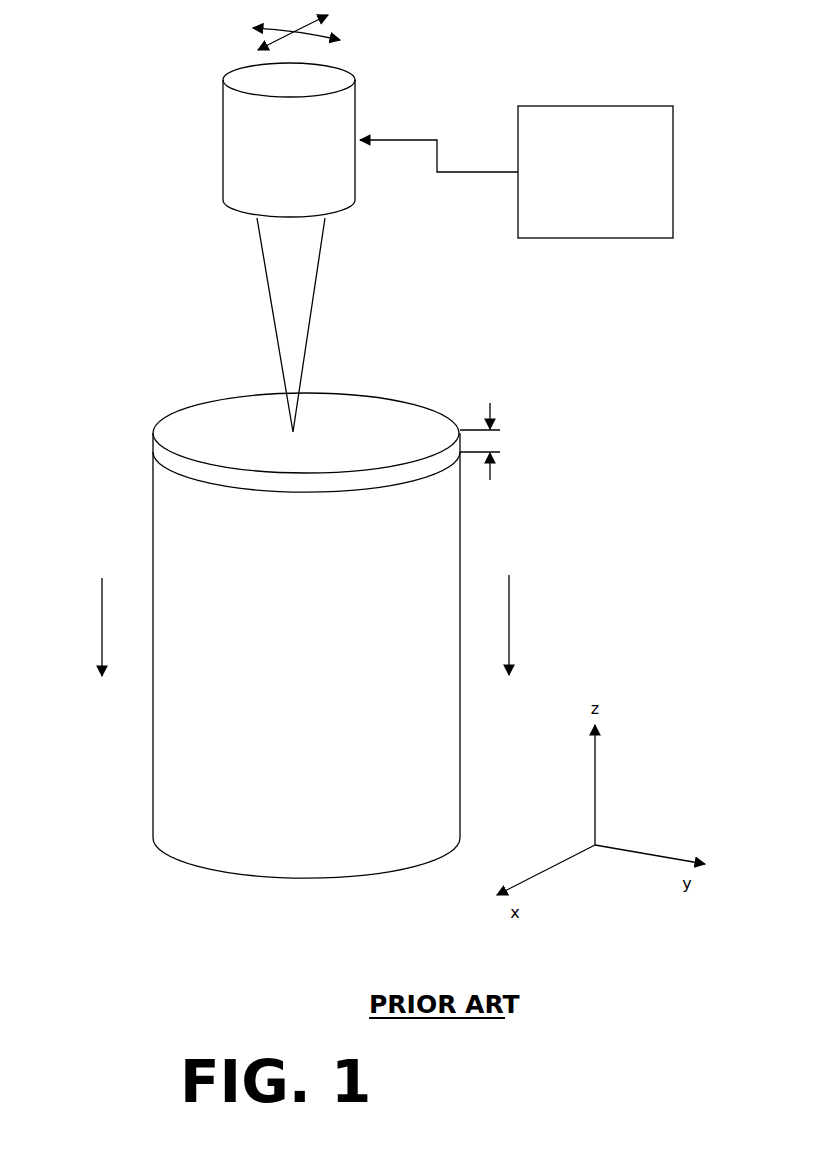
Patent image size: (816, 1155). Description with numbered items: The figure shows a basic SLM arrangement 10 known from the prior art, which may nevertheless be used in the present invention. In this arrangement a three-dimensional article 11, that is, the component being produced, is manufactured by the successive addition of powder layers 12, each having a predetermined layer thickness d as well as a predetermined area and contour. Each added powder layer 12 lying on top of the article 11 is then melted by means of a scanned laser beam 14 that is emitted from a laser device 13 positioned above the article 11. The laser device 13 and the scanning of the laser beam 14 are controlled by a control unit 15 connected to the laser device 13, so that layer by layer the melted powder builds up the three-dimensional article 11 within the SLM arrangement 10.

The SLM arrangement 10 is at (596, 416).
The three-dimensional article 11 is at (305, 635).
The powder layer 12 is at (153, 440).
The laser device 13 is at (289, 116).
The laser beam 14 is at (270, 307).
The control unit 15 is at (516, 172).